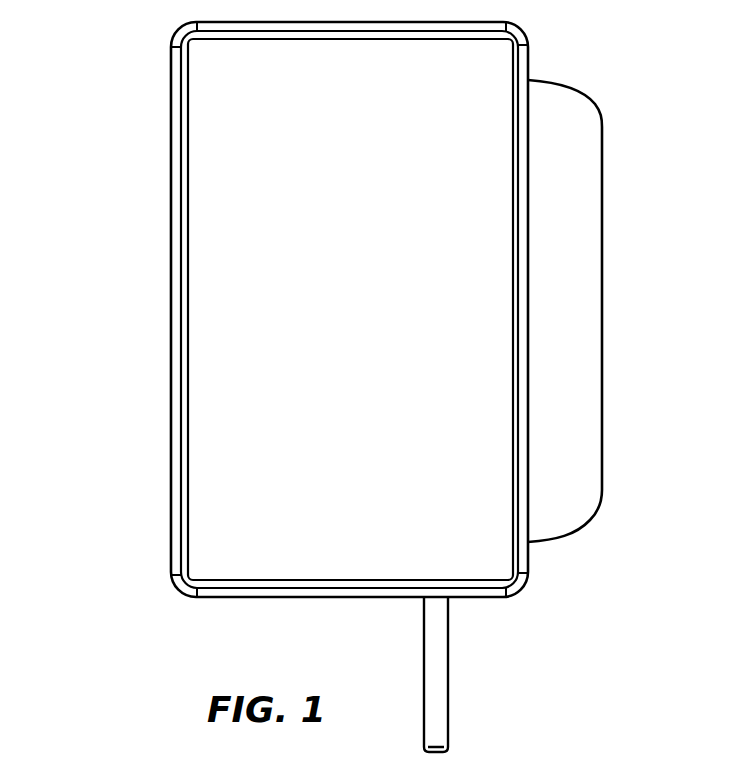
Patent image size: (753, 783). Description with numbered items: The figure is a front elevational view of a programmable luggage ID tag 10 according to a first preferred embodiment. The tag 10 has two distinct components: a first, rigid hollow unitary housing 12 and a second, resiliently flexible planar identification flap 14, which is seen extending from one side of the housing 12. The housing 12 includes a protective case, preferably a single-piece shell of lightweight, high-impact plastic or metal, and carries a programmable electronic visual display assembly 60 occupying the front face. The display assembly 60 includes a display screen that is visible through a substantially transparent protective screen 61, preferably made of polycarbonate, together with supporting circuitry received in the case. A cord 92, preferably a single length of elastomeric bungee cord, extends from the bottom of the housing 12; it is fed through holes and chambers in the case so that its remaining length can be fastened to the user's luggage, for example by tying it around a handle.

The programmable luggage ID tag 10 is at (136, 87).
The housing 12 is at (168, 242).
The identification flap 14 is at (582, 68).
The electronic visual display assembly 60 is at (187, 433).
The protective screen 61 is at (367, 322).
The cord 92 is at (448, 688).